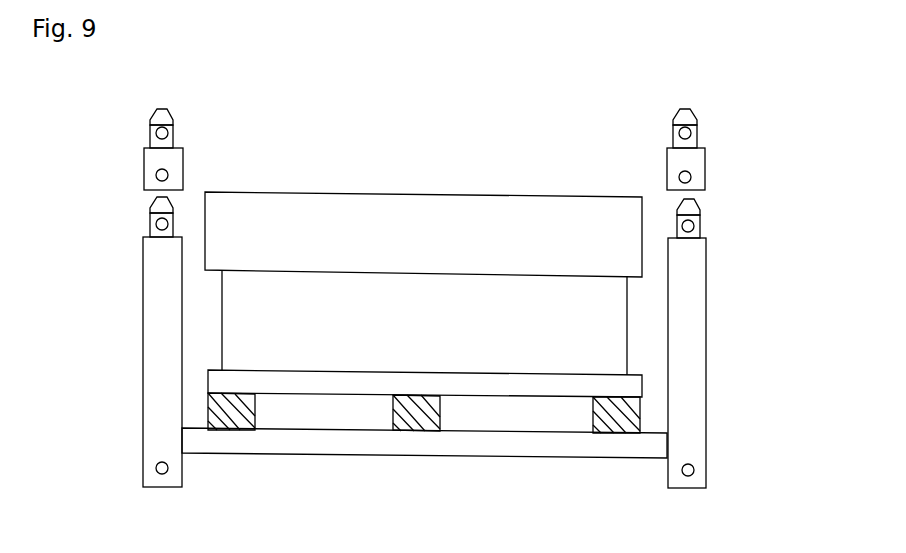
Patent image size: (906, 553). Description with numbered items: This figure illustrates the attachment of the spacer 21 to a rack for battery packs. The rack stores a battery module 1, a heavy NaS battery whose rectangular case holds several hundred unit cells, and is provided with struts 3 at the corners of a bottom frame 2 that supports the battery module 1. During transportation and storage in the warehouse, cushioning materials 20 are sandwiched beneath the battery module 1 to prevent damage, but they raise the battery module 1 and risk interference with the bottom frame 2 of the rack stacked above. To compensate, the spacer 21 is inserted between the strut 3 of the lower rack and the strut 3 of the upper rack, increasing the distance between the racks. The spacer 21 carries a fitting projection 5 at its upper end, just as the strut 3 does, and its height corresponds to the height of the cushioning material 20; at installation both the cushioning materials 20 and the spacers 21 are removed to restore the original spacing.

The battery module 1 is at (595, 318).
The bottom frame 2 is at (495, 447).
The strut 3 is at (690, 335).
The fitting projection 5 is at (700, 223).
The cushioning material 20 is at (627, 417).
The spacer 21 is at (695, 167).